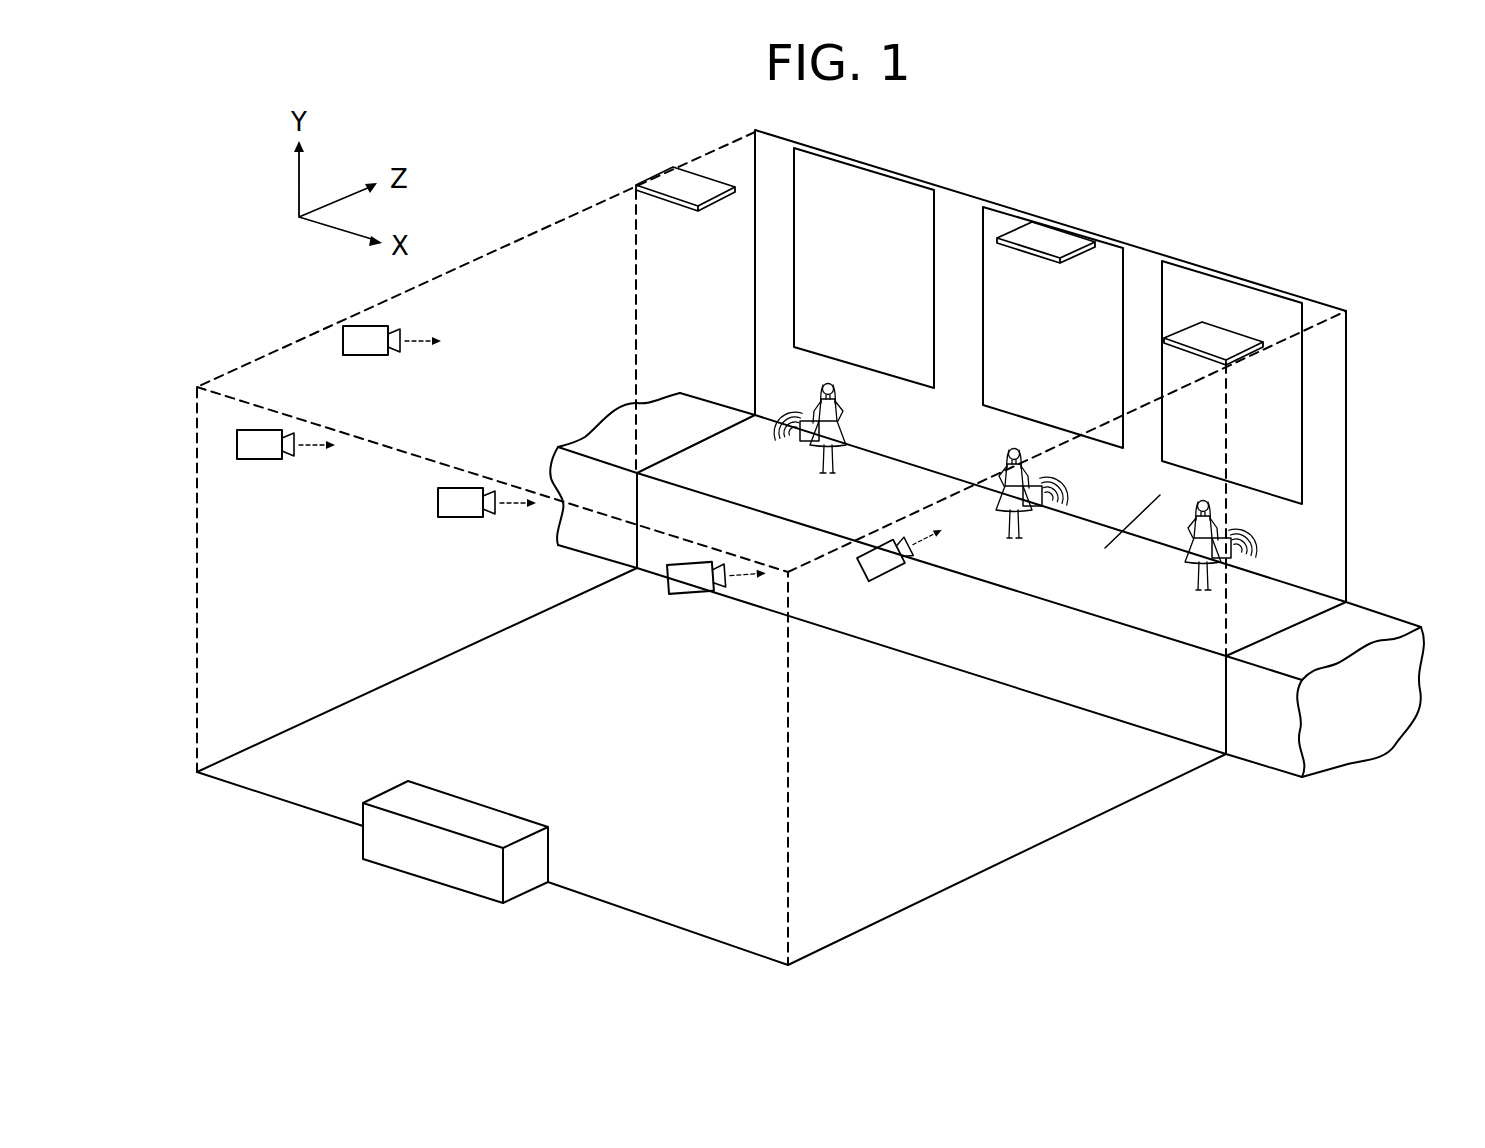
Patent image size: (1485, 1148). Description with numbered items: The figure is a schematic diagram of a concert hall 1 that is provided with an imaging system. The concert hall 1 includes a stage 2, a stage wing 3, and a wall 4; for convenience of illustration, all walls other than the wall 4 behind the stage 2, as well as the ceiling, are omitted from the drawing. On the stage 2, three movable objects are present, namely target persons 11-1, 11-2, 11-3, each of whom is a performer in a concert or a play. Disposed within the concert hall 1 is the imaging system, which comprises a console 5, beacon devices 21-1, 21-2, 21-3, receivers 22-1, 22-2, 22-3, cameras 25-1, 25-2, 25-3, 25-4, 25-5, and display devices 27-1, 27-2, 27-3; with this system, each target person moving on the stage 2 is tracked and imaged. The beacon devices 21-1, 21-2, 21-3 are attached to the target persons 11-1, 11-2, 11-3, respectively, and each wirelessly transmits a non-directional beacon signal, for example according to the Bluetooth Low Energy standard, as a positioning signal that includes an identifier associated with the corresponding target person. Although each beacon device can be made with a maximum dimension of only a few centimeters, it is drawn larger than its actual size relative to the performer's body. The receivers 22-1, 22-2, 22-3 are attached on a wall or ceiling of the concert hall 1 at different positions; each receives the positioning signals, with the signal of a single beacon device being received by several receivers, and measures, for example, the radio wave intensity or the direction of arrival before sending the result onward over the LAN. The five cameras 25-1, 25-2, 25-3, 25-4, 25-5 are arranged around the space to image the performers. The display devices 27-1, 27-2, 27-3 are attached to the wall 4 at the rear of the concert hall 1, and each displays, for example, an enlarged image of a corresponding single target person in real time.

The concert hall 1 is at (241, 583).
The stage 2 is at (1160, 495).
The stage wing 3 is at (681, 407).
The wall 4 is at (767, 153).
The console 5 is at (425, 865).
The target person 11-1 is at (840, 397).
The target person 11-2 is at (1023, 465).
The target person 11-3 is at (1226, 513).
The beacon device 21-1 is at (810, 437).
The beacon device 21-2 is at (1033, 508).
The beacon device 21-3 is at (1220, 563).
The receiver 22-1 is at (660, 182).
The receiver 22-2 is at (1042, 237).
The receiver 22-3 is at (1200, 322).
The camera 25-1 is at (361, 348).
The camera 25-2 is at (255, 452).
The camera 25-3 is at (462, 512).
The camera 25-4 is at (683, 587).
The camera 25-5 is at (888, 564).
The display device 27-1 is at (877, 187).
The display device 27-2 is at (1107, 258).
The display device 27-3 is at (1278, 305).